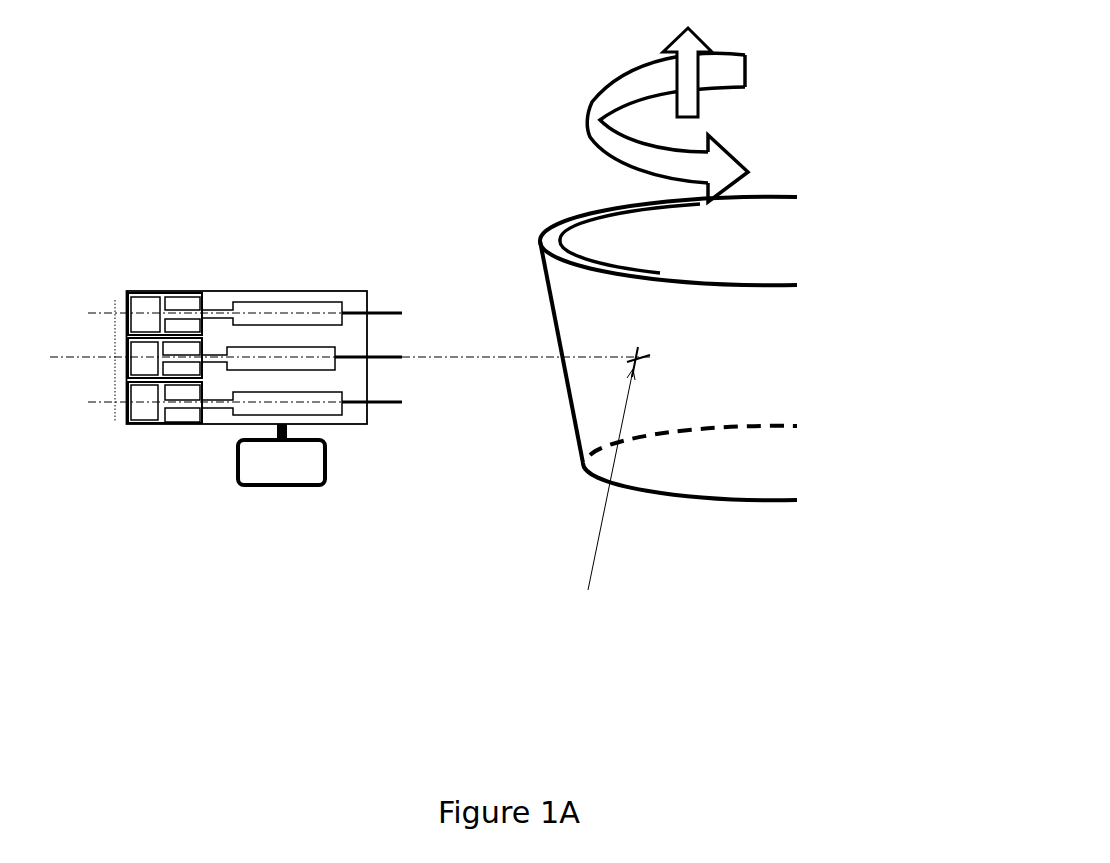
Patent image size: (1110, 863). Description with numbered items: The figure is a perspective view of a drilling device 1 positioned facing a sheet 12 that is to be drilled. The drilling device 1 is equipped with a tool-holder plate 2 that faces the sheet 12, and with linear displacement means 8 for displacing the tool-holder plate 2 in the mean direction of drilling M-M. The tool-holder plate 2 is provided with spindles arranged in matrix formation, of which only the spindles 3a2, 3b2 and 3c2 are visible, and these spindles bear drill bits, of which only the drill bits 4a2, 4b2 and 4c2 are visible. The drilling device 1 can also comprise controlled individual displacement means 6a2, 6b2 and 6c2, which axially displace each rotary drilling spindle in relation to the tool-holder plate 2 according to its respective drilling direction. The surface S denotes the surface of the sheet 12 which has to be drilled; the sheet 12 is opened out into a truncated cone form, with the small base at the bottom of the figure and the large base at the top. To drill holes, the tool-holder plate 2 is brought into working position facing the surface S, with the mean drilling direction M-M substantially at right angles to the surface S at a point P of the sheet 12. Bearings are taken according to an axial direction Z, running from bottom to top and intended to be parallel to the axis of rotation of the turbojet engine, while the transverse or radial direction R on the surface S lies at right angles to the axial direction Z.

The drilling device 1 is at (242, 362).
The tool-holder plate 2 is at (325, 293).
The spindle 3a2 is at (314, 323).
The spindle 3b2 is at (306, 348).
The spindle 3c2 is at (300, 393).
The drill bit 4a2 is at (384, 311).
The drill bit 4b2 is at (384, 356).
The drill bit 4c2 is at (384, 401).
The controlled individual displacement means 6a2 is at (124, 293).
The controlled individual displacement means 6b2 is at (123, 365).
The controlled individual displacement means 6c2 is at (155, 420).
The linear displacement means 8 is at (270, 486).
The sheet 12 is at (786, 195).
The mean direction of drilling M is at (75, 358).
The point P is at (605, 503).
The surface S is at (768, 367).
The transverse direction R is at (587, 107).
The axial direction Z is at (690, 36).